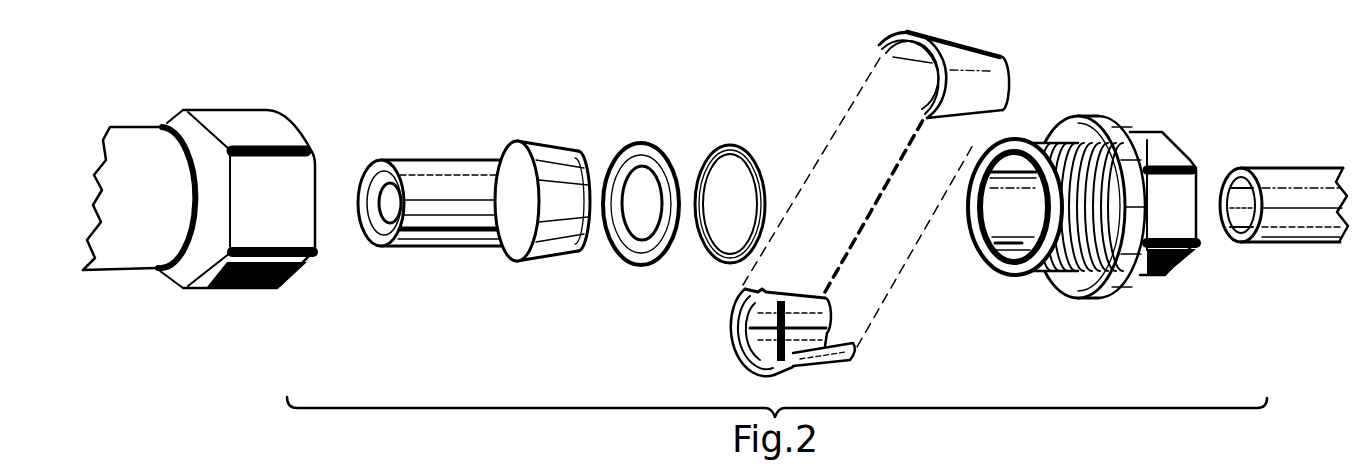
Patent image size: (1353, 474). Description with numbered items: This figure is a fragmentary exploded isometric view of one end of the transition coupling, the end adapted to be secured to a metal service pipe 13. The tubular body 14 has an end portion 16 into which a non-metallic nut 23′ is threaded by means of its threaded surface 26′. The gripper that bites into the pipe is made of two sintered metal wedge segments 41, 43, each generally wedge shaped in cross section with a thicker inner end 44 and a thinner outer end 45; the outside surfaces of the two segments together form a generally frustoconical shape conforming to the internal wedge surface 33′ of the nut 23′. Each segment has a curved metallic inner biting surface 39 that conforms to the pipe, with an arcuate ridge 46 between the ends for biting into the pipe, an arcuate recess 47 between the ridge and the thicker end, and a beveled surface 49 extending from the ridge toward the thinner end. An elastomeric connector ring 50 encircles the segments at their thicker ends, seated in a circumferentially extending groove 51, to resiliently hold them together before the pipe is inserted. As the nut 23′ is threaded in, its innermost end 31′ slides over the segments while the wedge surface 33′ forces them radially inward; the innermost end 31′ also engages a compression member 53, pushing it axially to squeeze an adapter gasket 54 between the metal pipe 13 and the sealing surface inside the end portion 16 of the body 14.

The tubular body 14 is at (137, 131).
The end portion 16 is at (245, 289).
The adapter gasket 54 is at (453, 170).
The compression member 53 is at (635, 142).
The connector ring 50 is at (737, 147).
The thicker inner end 44 is at (895, 45).
The wedge segment 41 is at (943, 0).
The thinner outer end 45 is at (1007, 92).
The circumferentially extending groove 51 is at (940, 120).
The threaded surface 26′ is at (1060, 133).
The nut 23′ is at (1132, 120).
The metal service pipe 13 is at (1292, 247).
The internal wedge surface 33′ is at (978, 236).
The innermost end 31′ is at (988, 262).
The arcuate ridge 46 is at (800, 307).
The beveled surface 49 is at (823, 332).
The inner biting surface 39 is at (740, 335).
The arcuate recess 47 is at (760, 348).
The wedge segment 43 is at (842, 359).